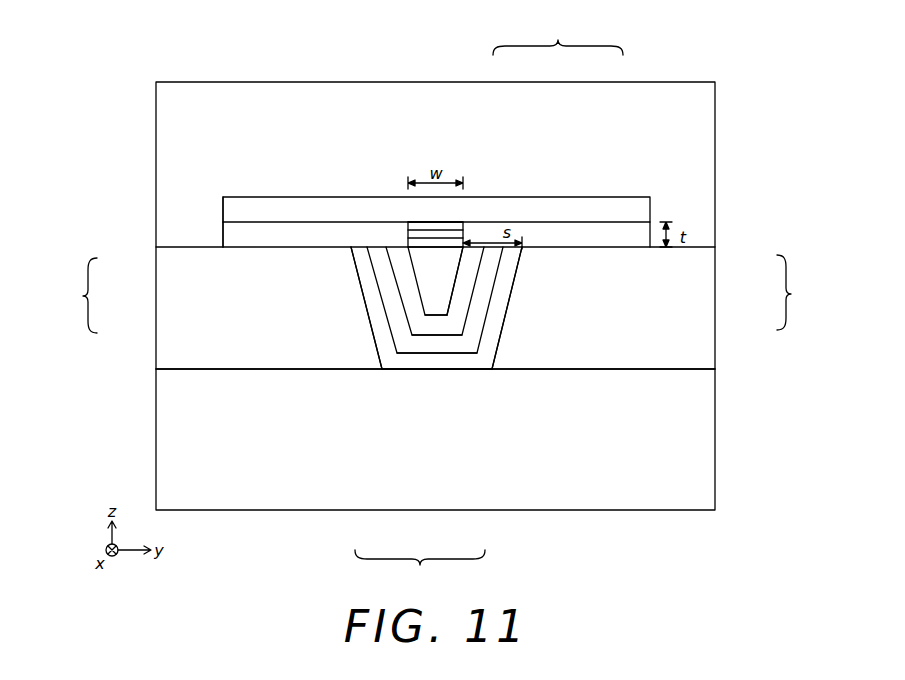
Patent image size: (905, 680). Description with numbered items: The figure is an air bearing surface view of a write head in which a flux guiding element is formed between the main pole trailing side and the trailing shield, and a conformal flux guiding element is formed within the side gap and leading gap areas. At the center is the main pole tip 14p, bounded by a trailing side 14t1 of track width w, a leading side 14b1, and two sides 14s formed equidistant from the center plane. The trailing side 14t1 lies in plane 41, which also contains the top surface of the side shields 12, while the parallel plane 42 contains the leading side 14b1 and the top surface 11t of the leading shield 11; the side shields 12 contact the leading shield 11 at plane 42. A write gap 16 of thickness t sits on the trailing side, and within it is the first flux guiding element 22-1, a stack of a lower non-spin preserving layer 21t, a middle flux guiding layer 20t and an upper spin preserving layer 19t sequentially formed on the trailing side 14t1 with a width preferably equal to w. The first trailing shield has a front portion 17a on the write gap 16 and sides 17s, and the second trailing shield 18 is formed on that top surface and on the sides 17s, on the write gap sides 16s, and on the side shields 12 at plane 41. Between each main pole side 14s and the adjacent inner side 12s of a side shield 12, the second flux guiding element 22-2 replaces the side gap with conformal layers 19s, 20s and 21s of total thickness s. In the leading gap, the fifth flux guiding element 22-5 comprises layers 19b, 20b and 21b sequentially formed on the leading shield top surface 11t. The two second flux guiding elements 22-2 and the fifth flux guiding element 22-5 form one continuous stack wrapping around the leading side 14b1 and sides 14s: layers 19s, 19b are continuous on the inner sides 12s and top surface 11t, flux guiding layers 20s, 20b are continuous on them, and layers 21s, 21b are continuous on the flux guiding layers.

The leading shield 11 is at (168, 427).
The leading shield top surface 11t is at (470, 372).
The side shield 12 is at (168, 336).
The inner side of side shield 12s is at (365, 300).
The main pole tip 14p is at (420, 262).
The main pole trailing side 14t1 is at (413, 224).
The main pole leading side 14b1 is at (435, 308).
The main pole sides 14s is at (449, 304).
The write gap 16 is at (252, 237).
The write gap sides 16s is at (223, 236).
The front portion of first trailing shield 17a is at (277, 213).
The first trailing shield sides 17s is at (223, 210).
The second trailing shield 18 is at (705, 173).
The upper spin preserving layer 19t is at (463, 224).
The middle flux guiding layer 20t is at (463, 233).
The lower non-spin preserving layer 21t is at (463, 242).
The spin preserving layer 19s is at (363, 259).
The flux guiding layer 20s is at (383, 275).
The non-spin preserving layer 21s is at (408, 288).
The non-spin preserving layer 19b is at (448, 360).
The flux guiding layer 20b is at (439, 343).
The non-spin preserving layer 21b is at (433, 327).
The first flux guiding element 22-1 is at (558, 34).
The second flux guiding element 22-2 is at (437, 294).
The fifth flux guiding element 22-5 is at (420, 570).
The plane 41- 41 is at (735, 247).
The plane 42- 42 is at (737, 369).